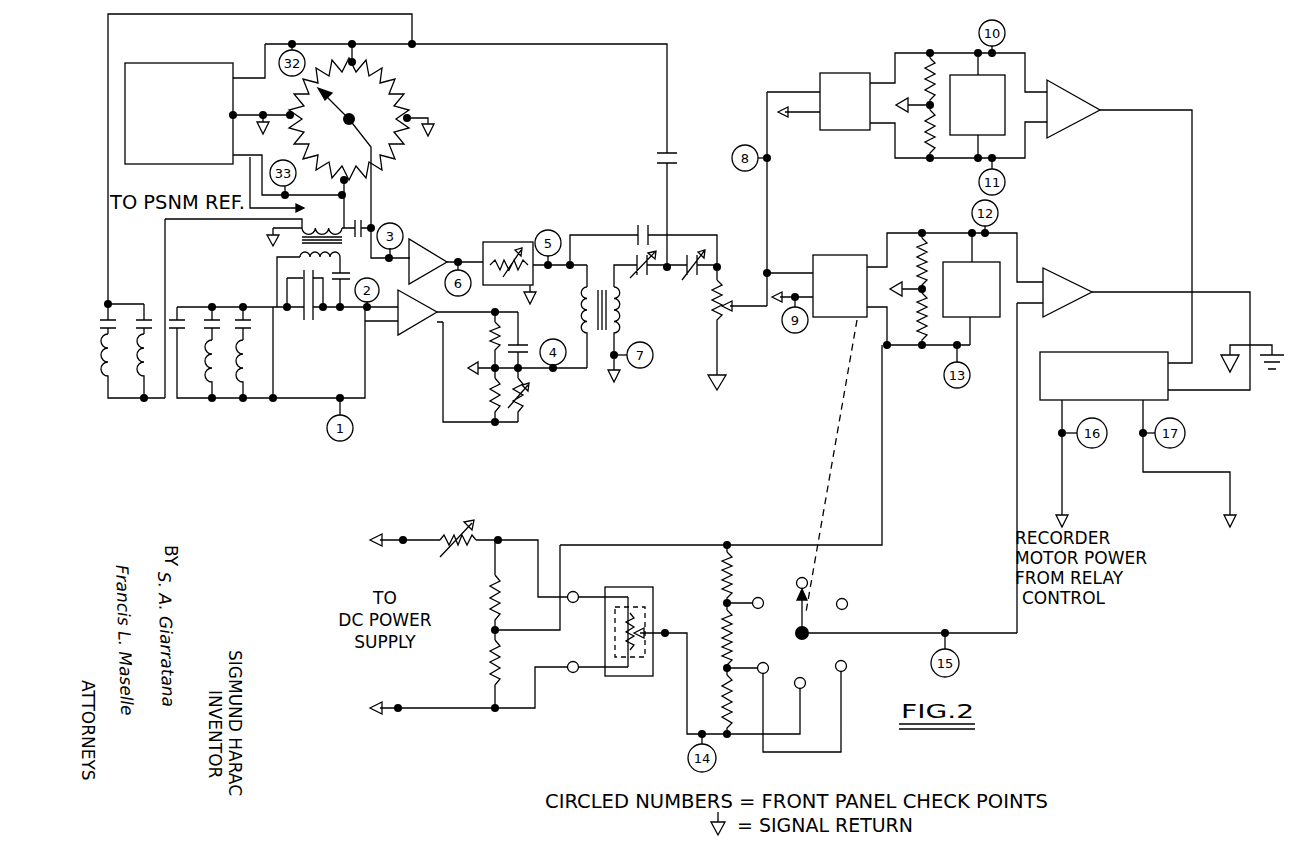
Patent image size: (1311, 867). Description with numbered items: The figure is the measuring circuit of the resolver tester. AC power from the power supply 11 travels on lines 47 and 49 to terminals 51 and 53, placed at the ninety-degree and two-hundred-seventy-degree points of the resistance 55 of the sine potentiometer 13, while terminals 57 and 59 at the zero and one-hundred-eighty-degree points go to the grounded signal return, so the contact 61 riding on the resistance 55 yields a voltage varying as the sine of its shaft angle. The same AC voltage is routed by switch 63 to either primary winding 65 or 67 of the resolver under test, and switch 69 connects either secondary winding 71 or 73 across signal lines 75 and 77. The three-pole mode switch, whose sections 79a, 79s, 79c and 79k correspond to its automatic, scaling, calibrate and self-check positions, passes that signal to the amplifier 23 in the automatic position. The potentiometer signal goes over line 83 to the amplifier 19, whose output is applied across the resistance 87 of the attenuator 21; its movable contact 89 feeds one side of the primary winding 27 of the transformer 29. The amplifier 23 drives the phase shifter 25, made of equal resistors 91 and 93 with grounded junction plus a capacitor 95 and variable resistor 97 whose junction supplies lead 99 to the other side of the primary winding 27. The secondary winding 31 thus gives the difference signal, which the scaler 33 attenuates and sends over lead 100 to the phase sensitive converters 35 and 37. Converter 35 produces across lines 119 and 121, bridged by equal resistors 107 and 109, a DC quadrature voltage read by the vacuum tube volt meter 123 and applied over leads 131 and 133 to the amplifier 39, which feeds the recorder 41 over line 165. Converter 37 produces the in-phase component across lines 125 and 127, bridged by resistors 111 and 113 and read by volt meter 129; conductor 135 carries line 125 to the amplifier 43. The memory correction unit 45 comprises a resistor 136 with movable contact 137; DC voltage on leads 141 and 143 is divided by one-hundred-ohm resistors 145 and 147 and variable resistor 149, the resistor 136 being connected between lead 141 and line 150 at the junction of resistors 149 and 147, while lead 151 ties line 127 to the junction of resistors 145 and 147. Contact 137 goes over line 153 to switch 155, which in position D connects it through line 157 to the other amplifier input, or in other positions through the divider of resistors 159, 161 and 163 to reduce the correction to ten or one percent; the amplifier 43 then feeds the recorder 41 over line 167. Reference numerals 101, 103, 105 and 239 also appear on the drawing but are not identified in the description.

The AC power supply 11 is at (208, 70).
The sine potentiometer 13 is at (380, 114).
The buffer amplifier 19 is at (428, 271).
The attenuator 21 is at (505, 250).
The buffer amplifier 23 is at (420, 322).
The phase shifter 25 is at (500, 422).
The primary winding 27 is at (586, 316).
The transformer 29 is at (610, 262).
The secondary winding 31 is at (616, 305).
The scaler 33 is at (724, 288).
The phase sensitive converter 35 is at (848, 73).
The phase sensitive converter 37 is at (850, 255).
The amplifier 39 is at (1060, 90).
The recorder 41 is at (1125, 352).
The amplifier 43 is at (1060, 272).
The memory correction unit 45 is at (653, 605).
The line 47 is at (254, 20).
The line 49 is at (165, 240).
The terminal 51 is at (358, 66).
The terminal 53 is at (344, 186).
The resistance 55 is at (397, 88).
The terminal 57 is at (283, 112).
The terminal 59 is at (410, 116).
The contact 61 is at (335, 114).
The switch 63 is at (141, 316).
The primary winding 65 is at (114, 360).
The primary winding 67 is at (146, 399).
The switch 69 is at (212, 316).
The secondary winding 71 is at (245, 388).
The secondary winding 73 is at (214, 388).
The signal line 75 is at (244, 316).
The signal line 77 is at (326, 392).
The three-pole switch, automatic position 79a is at (306, 314).
The three-pole switch, calibrate position 79c is at (667, 155).
The three-pole switch, self-check position 79k is at (358, 240).
The three-pole switch, scaling position 79s is at (640, 230).
The line 83 is at (373, 186).
The resistance 87 is at (470, 258).
The movable contact 89 is at (515, 252).
The resistor 91 is at (490, 340).
The resistor 93 is at (490, 392).
The capacitor 95 is at (517, 347).
The variable resistor 97 is at (525, 408).
The lead 99 is at (563, 372).
The lead 100 is at (770, 203).
The transformer secondary 101 is at (277, 258).
The transformer 103 is at (334, 228).
The capacitor 105 is at (368, 212).
The resistor 107 is at (925, 60).
The resistor 109 is at (925, 150).
The resistor 111 is at (915, 262).
The resistor 113 is at (915, 322).
The line 119 is at (960, 50).
The line 121 is at (960, 160).
The vacuum tube volt meter 123 is at (1000, 118).
The line 125 is at (916, 233).
The line 127 is at (912, 347).
The vacuum tube volt meter 129 is at (975, 318).
The lead 131 is at (1015, 50).
The lead 133 is at (1015, 162).
The conductor 135 is at (1018, 240).
The resistor 136 is at (620, 638).
The movable contact 137 is at (653, 660).
The lead 141 is at (445, 708).
The lead 143 is at (431, 540).
The resistor 145 is at (490, 667).
The resistor 147 is at (490, 604).
The variable resistor 149 is at (452, 530).
The line 150 is at (532, 545).
The lead 151 is at (792, 545).
The line 153 is at (683, 722).
The switch 155 is at (808, 607).
The line 157 is at (1017, 630).
The resistor 159 is at (722, 702).
The resistor 161 is at (733, 645).
The resistor 163 is at (722, 575).
The line 165 is at (1192, 206).
The line 167 is at (1250, 390).
The stepper coil 239 is at (1255, 583).